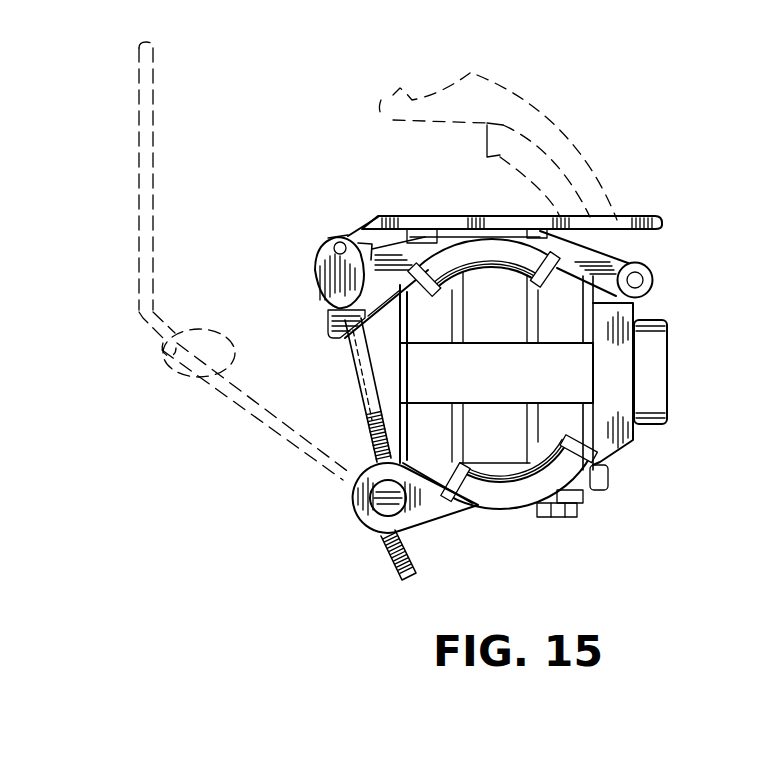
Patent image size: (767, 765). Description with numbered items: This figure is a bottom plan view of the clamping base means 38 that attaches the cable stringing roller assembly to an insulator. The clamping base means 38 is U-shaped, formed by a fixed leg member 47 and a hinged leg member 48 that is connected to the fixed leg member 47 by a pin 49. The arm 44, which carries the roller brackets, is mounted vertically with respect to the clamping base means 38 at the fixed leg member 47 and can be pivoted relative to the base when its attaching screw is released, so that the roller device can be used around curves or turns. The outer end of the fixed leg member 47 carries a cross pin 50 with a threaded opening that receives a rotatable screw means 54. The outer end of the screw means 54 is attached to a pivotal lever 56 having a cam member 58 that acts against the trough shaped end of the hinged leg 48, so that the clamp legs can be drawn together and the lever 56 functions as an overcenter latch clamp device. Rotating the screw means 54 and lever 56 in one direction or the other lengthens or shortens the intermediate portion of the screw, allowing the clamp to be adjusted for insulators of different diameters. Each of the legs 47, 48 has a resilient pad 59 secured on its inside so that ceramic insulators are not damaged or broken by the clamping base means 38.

The clamping base means 38 is at (347, 377).
The arm 44 is at (567, 362).
The fixed leg member 47 is at (363, 512).
The hinged leg member 48 is at (400, 100).
The pin 49 is at (643, 280).
The cross pin 50 is at (393, 497).
The screw means 54 is at (288, 447).
The pivotal lever 56 is at (153, 148).
The cam member 58 is at (318, 287).
The resilient pad 59 is at (513, 262).